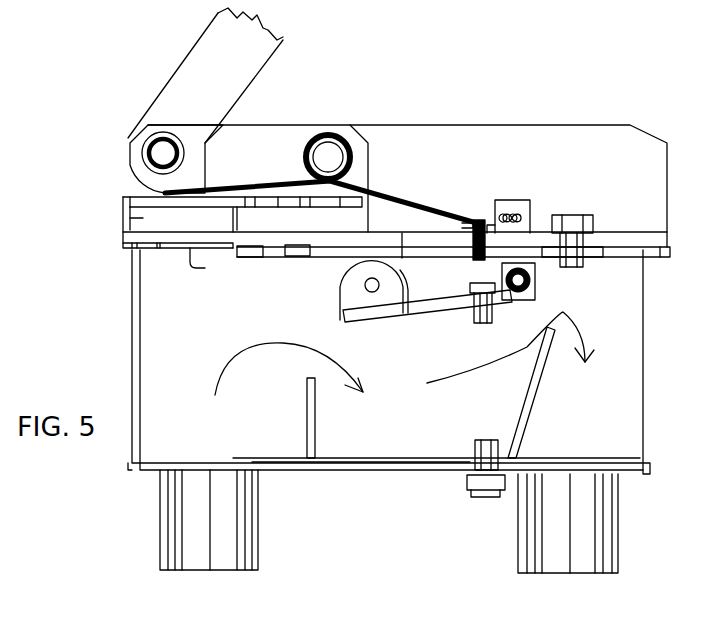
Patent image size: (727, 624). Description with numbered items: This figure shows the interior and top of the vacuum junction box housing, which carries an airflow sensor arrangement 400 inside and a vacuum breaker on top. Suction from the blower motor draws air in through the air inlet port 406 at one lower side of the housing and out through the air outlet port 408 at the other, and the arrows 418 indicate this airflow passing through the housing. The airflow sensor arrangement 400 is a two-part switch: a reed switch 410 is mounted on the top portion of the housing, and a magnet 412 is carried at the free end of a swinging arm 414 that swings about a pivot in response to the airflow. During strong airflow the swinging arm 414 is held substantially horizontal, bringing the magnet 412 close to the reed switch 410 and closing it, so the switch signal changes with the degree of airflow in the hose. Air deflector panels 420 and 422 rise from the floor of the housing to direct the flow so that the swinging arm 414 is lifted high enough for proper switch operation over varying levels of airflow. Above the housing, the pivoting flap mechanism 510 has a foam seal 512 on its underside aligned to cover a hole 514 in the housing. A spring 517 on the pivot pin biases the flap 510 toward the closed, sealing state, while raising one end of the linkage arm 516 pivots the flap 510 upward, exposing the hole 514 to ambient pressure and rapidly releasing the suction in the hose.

The airflow sensor arrangement 400 is at (402, 364).
The air inlet port 406 is at (230, 570).
The air outlet port 408 is at (520, 557).
The reed switch 410 is at (502, 200).
The magnet 412 is at (533, 273).
The swinging arm 414 is at (435, 315).
The arrows 418 is at (218, 375).
The air deflector panel 420 is at (323, 402).
The air deflector panel 422 is at (525, 435).
The pivoting flap mechanism 510 is at (130, 172).
The foam seal 512 is at (143, 223).
The hole 514 is at (190, 250).
The linkage arm 516 is at (207, 33).
The spring 517 is at (327, 125).